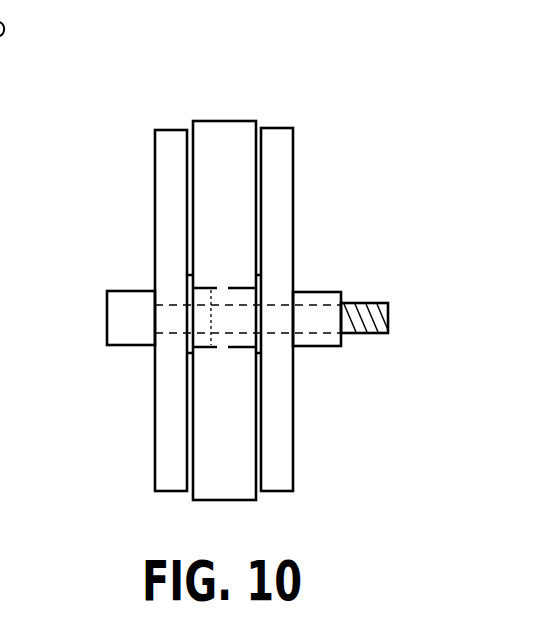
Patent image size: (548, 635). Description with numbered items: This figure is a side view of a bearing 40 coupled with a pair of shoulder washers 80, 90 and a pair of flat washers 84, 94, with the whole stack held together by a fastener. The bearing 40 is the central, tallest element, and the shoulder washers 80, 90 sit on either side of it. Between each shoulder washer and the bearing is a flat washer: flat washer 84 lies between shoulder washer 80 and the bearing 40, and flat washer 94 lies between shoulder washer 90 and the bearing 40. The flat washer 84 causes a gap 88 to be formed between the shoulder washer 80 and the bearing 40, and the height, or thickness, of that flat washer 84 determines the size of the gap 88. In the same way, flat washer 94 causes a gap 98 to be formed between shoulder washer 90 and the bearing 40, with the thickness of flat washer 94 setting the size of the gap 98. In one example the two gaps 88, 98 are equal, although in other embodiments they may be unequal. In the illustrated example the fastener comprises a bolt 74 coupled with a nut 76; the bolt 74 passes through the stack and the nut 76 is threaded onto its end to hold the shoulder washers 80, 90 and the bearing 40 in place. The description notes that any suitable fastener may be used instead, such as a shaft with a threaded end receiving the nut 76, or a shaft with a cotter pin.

The bearing 40 is at (231, 80).
The shoulder washer 80 is at (128, 182).
The gap 88 is at (172, 90).
The bolt 74 is at (132, 290).
The flat washer 84 is at (187, 347).
The shoulder washer 90 is at (353, 164).
The gap 98 is at (264, 90).
The nut 76 is at (315, 292).
The flat washer 94 is at (265, 345).